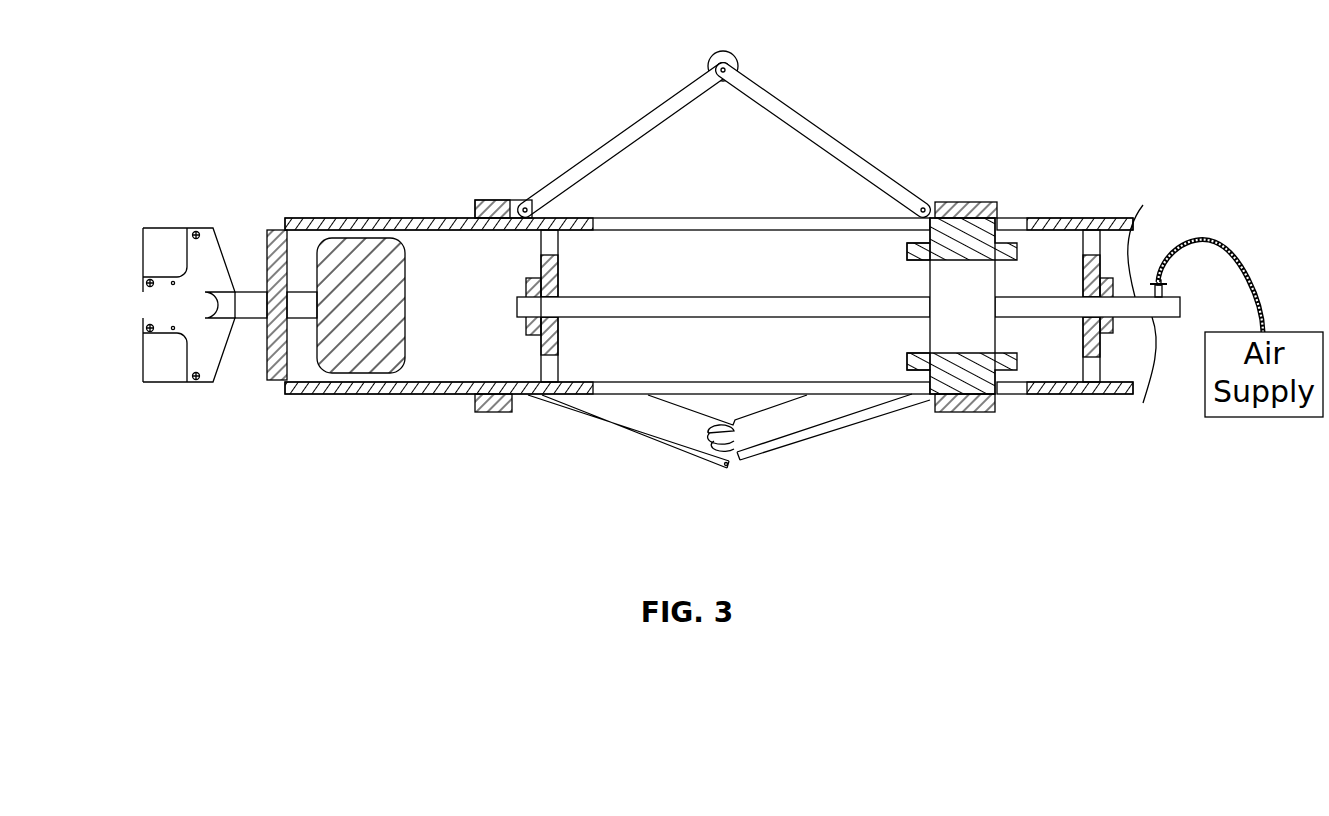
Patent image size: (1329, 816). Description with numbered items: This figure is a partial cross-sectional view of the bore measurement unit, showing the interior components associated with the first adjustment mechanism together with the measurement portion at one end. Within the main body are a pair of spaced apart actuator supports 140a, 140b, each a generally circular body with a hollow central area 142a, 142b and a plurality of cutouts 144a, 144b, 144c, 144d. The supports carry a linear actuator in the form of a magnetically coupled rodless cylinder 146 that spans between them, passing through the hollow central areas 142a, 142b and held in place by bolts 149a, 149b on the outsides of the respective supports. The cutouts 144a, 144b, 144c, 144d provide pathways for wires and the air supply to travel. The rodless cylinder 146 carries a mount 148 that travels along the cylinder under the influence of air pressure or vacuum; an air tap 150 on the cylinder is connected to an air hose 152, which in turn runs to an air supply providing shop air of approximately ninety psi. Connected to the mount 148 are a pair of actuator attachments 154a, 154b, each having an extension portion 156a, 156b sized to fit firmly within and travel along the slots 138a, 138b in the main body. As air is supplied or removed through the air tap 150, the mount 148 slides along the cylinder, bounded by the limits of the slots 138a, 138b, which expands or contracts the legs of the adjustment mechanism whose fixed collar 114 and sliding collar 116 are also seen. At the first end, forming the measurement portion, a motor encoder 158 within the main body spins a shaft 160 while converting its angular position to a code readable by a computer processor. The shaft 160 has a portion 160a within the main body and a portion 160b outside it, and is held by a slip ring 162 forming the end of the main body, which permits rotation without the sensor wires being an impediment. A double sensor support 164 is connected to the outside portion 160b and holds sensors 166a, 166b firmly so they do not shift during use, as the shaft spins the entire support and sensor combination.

The fixed collar 114 is at (497, 213).
The sliding collar 116 is at (968, 210).
The slot 138a is at (713, 223).
The slot 138b is at (838, 387).
The actuator support 140a is at (557, 260).
The actuator support 140b is at (1085, 357).
The hollow central area 142a is at (557, 317).
The hollow central area 142b is at (1083, 290).
The cutout 144a is at (547, 240).
The cutout 144b is at (547, 375).
The cutout 144c is at (1087, 240).
The cutout 144d is at (1092, 373).
The magnetically coupled rodless cylinder 146 is at (755, 300).
The mount 148 is at (942, 324).
The bolt 149a is at (530, 285).
The bolt 149b is at (1113, 330).
The air tap 150 is at (1163, 287).
The air hose 152 is at (1227, 245).
The actuator attachment 154a is at (933, 245).
The actuator attachment 154b is at (933, 398).
The extension portion 156a is at (938, 228).
The extension portion 156b is at (966, 410).
The motor encoder 158 is at (370, 360).
The shaft 160 is at (275, 301).
The shaft portion within the main body 160a is at (298, 312).
The shaft portion outside the main body 160b is at (253, 300).
The slip ring 162 is at (275, 333).
The sensor support 164 is at (178, 284).
The sensor 166a is at (168, 238).
The sensor 166b is at (168, 372).